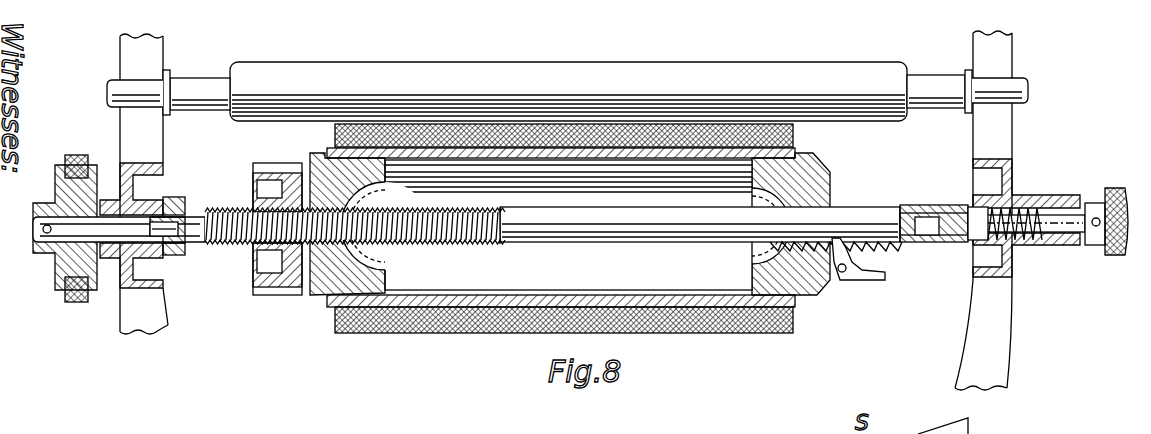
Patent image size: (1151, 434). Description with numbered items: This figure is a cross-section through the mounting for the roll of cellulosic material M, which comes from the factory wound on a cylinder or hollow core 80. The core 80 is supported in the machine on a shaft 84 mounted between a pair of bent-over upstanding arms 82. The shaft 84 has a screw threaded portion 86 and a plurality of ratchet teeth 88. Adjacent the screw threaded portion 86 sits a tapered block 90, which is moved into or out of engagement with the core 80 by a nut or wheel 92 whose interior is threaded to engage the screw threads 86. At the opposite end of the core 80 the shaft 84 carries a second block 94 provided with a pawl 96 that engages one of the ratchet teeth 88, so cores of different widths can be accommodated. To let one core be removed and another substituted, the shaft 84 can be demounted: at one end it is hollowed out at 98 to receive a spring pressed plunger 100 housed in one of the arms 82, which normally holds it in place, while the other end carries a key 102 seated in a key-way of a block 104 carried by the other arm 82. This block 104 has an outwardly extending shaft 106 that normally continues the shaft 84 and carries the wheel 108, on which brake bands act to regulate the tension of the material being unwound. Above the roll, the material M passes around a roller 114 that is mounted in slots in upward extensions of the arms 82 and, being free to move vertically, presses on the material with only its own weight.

The roller 114 is at (872, 51).
The bent-over upstanding arms 82 is at (127, 126).
The block 104 is at (170, 198).
The nut or wheel 92 is at (253, 179).
The key 102 is at (186, 220).
The second block 94 is at (802, 177).
The shaft 84 is at (884, 195).
The hollowed out end 98 is at (929, 205).
The spring pressed plunger 100 is at (1090, 202).
The wheel 108 is at (68, 232).
The outwardly extending shaft 106 is at (58, 260).
The screw threaded portion 86 is at (235, 246).
The hollow core 80 is at (568, 225).
The tapered block 90 is at (318, 296).
The cellulosic material M is at (452, 330).
The ratchet teeth 88 is at (883, 247).
The pawl 96 is at (862, 280).